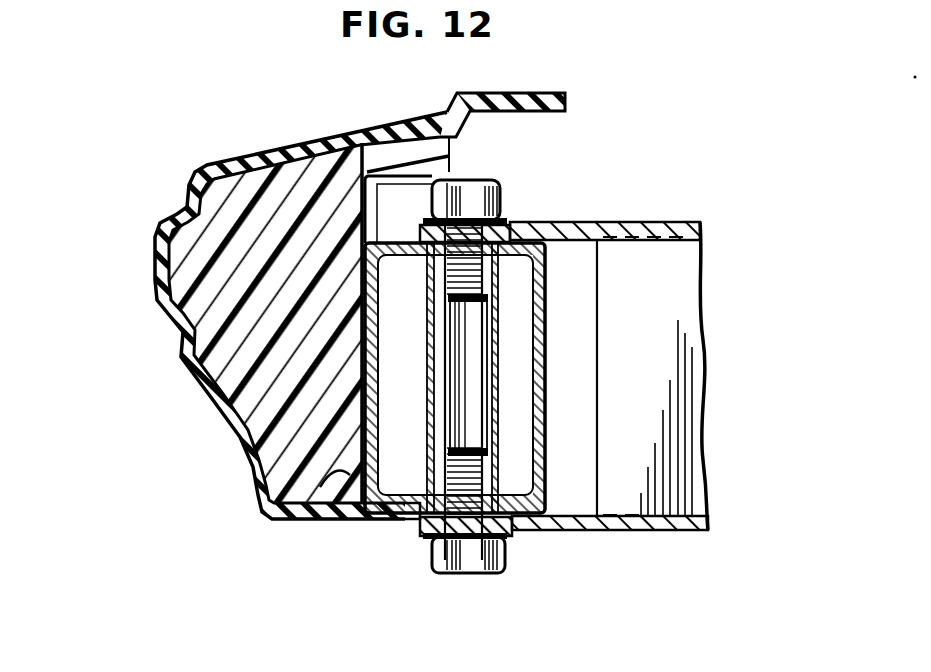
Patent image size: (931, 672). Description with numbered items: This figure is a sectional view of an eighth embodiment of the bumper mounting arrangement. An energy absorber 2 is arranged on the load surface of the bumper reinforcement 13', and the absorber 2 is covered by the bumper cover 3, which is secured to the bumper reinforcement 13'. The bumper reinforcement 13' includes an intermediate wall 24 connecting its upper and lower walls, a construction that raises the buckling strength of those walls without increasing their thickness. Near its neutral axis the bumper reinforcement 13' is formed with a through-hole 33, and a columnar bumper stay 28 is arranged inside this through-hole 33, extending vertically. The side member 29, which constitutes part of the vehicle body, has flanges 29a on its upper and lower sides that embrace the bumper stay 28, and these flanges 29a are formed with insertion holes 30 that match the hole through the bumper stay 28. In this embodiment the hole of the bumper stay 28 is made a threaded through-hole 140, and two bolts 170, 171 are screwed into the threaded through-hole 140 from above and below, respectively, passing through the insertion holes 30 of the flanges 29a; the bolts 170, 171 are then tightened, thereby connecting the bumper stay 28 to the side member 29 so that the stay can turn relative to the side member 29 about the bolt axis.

The energy absorber 2 is at (207, 287).
The bumper cover 3 is at (183, 357).
The bumper reinforcement 13' is at (346, 519).
The intermediate wall 24 is at (427, 450).
The bumper stay 28 is at (485, 360).
The side member 29 is at (690, 388).
The flange 29a is at (575, 222).
The insertion hole 30 is at (460, 182).
The through-hole 33 is at (428, 232).
The threaded through-hole 140 is at (482, 318).
The bolt 170 is at (500, 183).
The bolt 171 is at (470, 456).